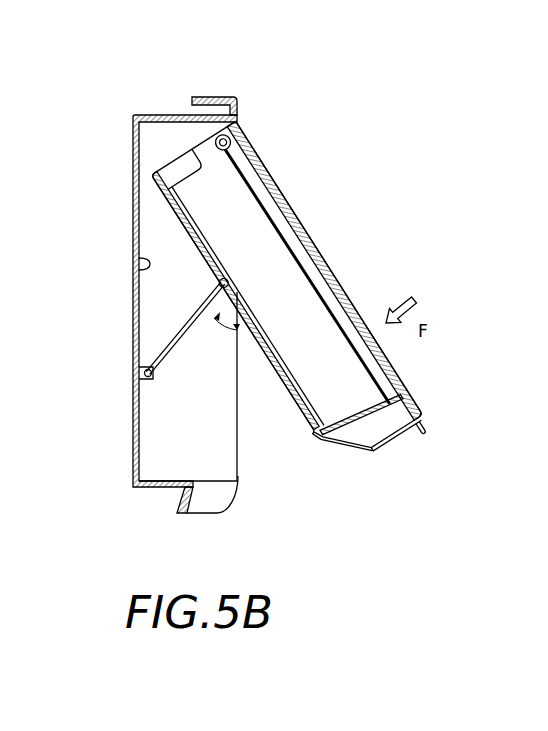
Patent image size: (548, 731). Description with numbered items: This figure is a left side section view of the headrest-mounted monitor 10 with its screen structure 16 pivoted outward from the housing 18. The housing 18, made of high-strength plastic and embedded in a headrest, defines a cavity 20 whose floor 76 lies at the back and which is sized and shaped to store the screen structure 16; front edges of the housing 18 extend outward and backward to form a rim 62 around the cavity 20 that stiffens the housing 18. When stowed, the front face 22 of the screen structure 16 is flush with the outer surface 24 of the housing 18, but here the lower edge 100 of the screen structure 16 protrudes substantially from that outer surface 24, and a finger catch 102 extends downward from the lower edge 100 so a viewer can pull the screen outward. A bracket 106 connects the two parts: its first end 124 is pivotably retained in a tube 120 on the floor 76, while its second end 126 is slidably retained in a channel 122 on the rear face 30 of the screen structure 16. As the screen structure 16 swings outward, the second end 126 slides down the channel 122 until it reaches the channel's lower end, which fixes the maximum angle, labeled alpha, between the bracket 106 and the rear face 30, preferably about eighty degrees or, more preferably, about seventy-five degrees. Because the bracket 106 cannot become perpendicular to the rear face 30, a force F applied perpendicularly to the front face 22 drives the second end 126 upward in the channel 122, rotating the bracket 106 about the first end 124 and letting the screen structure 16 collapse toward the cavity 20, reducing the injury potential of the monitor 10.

The monitor 10 is at (90, 70).
The screen structure 16 is at (311, 436).
The housing 18 is at (133, 433).
The cavity 20 is at (213, 462).
The front face of the screen structure 22 is at (256, 152).
The outer surface of the housing 24 is at (238, 106).
The rear face of the screen structure 30 is at (180, 224).
The rim 62 is at (212, 96).
The floor of the cavity 76 is at (148, 263).
The lower edge of the screen structure 100 is at (382, 450).
The finger catch 102 is at (424, 430).
The bracket 106 is at (192, 328).
The tube 120 is at (140, 377).
The channel 122 is at (178, 186).
The first end of the bracket 124 is at (139, 357).
The second end of the bracket 126 is at (232, 281).